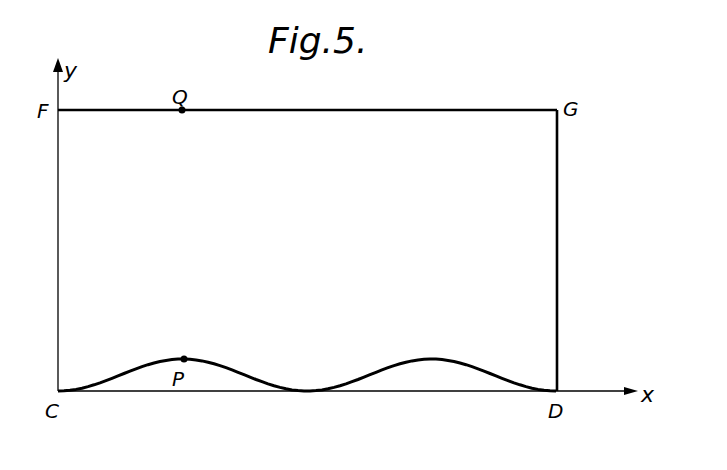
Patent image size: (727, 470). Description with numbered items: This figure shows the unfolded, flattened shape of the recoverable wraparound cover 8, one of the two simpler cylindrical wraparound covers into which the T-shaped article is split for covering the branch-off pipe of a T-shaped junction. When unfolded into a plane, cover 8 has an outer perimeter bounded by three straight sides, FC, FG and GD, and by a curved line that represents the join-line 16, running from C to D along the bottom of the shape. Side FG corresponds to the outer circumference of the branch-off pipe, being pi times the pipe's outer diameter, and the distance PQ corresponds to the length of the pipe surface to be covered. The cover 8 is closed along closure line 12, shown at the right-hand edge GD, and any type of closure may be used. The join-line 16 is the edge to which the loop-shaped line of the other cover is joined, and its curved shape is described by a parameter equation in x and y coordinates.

The wraparound cover 8 is at (522, 249).
The closure line 12 is at (559, 308).
The join-line 16 is at (401, 362).